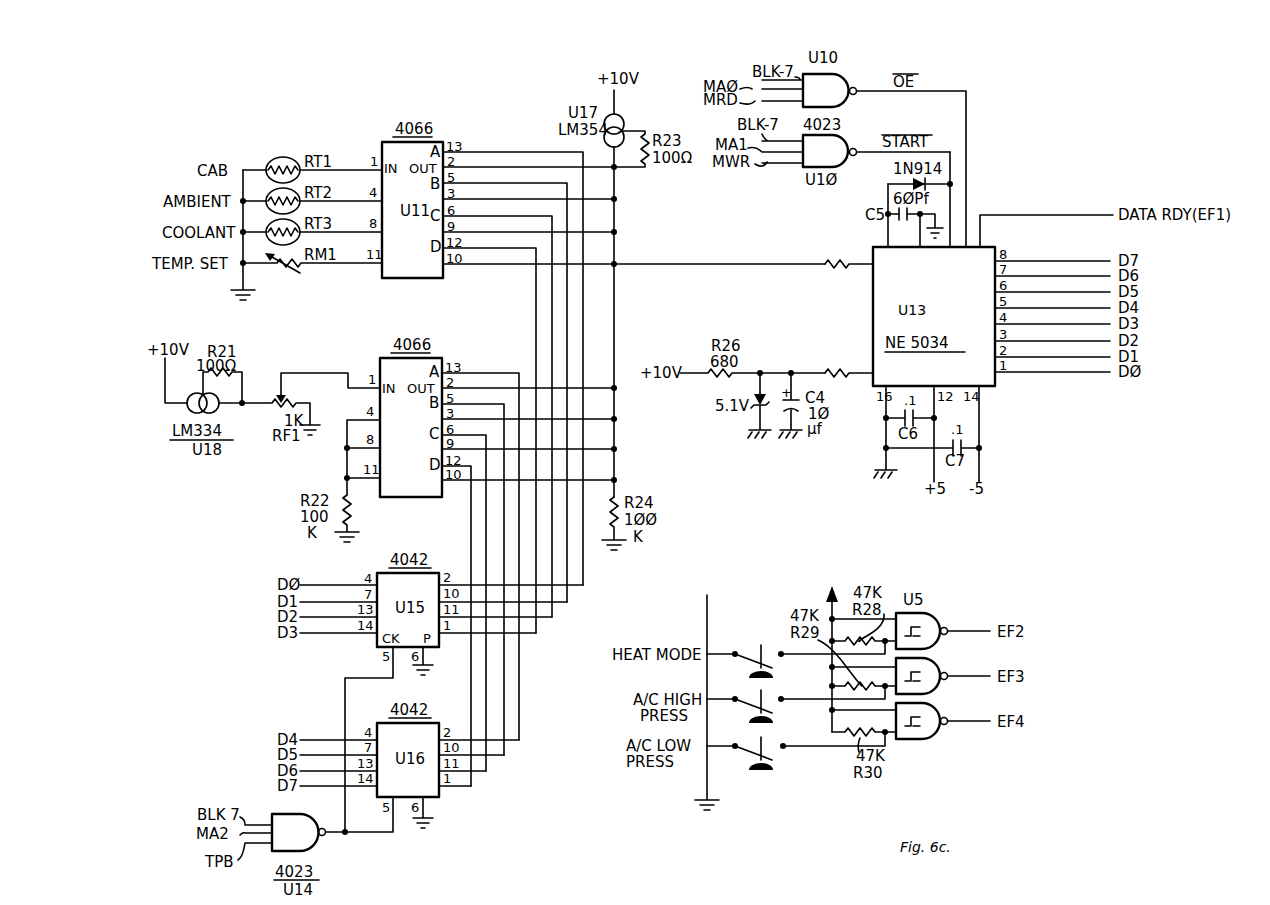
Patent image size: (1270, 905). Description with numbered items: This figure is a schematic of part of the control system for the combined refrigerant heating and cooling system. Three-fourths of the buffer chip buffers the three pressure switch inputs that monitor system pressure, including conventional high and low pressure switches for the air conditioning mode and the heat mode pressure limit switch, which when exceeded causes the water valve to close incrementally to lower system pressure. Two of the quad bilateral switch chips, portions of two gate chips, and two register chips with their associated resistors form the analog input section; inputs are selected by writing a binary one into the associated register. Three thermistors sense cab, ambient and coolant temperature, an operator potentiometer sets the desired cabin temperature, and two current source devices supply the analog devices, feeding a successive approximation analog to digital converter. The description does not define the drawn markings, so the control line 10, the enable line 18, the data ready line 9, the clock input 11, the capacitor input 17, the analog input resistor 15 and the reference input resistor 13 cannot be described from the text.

The start control line 10 is at (952, 214).
The output enable line 18 is at (967, 224).
The data ready line 9 is at (1046, 231).
The converter clock input 11 is at (886, 215).
The converter clock capacitor input 17 is at (915, 230).
The analog input resistor 15 is at (851, 264).
The reference input resistor 13 is at (850, 357).